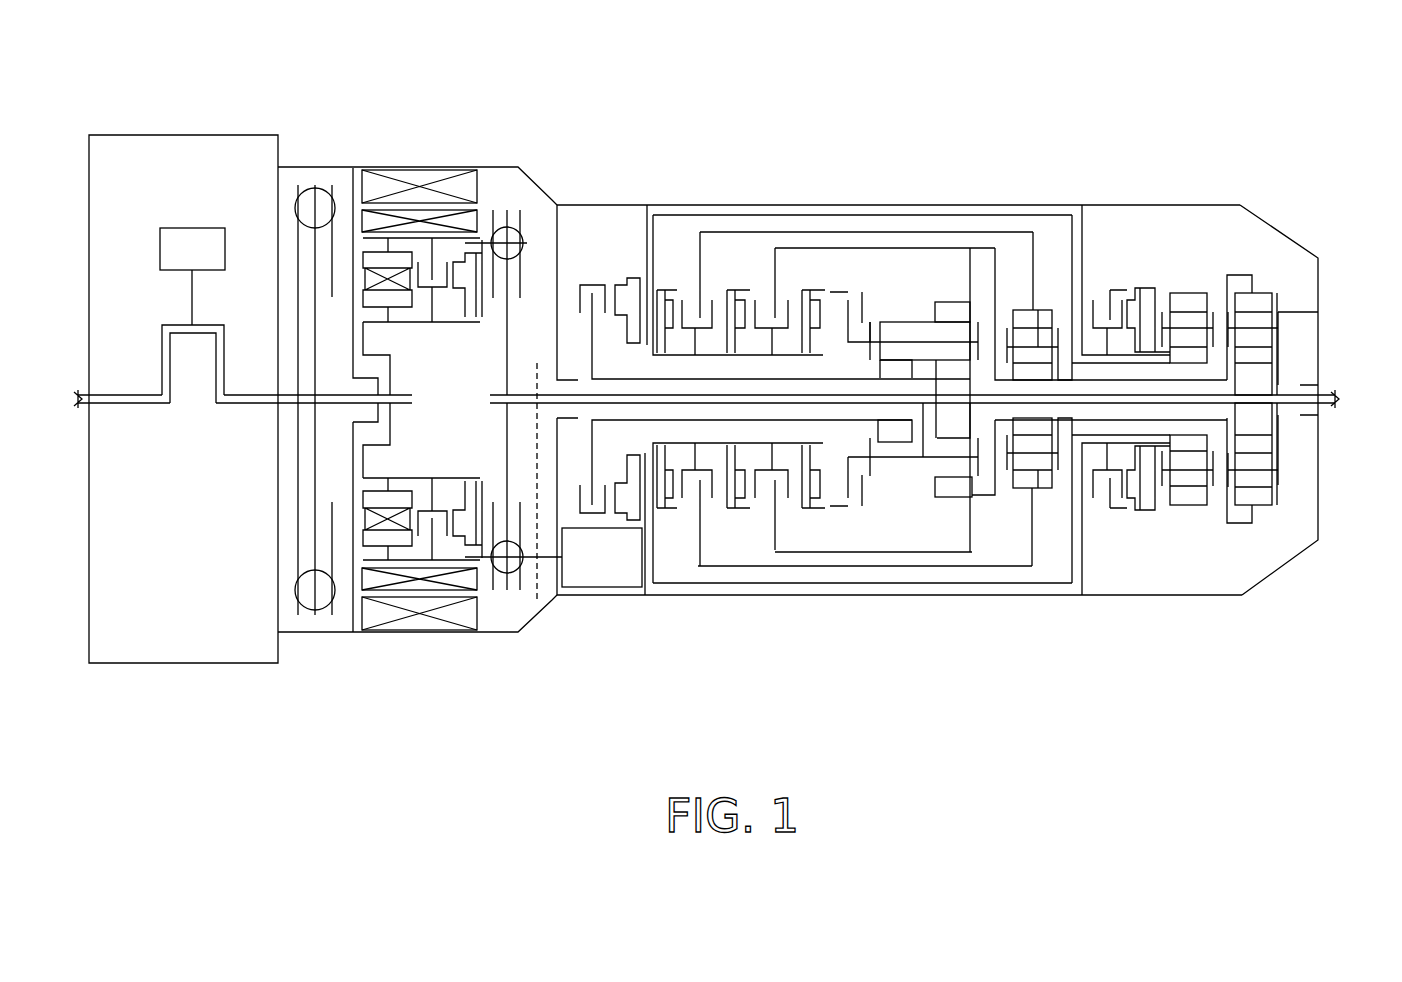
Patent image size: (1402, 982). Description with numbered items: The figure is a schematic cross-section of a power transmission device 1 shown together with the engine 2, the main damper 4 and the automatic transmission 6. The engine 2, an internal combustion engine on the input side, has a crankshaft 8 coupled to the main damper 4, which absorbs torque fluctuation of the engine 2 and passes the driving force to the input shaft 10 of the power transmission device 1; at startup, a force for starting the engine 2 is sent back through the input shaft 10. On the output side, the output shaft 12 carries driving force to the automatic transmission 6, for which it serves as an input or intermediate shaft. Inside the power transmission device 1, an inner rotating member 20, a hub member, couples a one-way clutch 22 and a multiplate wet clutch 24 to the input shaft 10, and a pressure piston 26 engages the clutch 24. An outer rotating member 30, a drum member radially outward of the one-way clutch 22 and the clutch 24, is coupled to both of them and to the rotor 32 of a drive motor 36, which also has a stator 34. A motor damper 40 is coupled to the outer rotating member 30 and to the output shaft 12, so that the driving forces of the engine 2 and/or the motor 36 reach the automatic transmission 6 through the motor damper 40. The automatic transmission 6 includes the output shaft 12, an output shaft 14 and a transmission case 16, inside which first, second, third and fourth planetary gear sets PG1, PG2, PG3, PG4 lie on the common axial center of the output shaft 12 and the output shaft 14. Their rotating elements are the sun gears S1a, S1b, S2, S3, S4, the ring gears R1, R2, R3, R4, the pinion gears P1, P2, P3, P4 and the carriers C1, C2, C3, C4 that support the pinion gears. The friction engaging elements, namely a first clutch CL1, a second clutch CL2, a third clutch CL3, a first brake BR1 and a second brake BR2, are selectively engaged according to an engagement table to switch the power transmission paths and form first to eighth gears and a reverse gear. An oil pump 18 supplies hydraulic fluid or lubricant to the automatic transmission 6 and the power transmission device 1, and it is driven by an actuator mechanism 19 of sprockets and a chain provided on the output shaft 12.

The power transmission device 1 is at (540, 158).
The engine 2 is at (168, 125).
The main damper 4 is at (306, 150).
The automatic transmission 6 is at (905, 203).
The crankshaft 8 is at (240, 405).
The input shaft 10 is at (330, 405).
The output shaft 12 is at (500, 405).
The output shaft 14 is at (1335, 399).
The transmission case 16 is at (1137, 205).
The oil pump 18 is at (598, 588).
The actuator mechanism 19 is at (537, 606).
The inner rotating member 20 is at (370, 340).
The one-way clutch 22 is at (402, 312).
The multiplate wet clutch 24 is at (442, 300).
The pressure piston 26 is at (478, 305).
The outer rotating member 30 is at (485, 215).
The rotor 32 is at (357, 220).
The stator 34 is at (396, 172).
The drive motor 36 is at (428, 165).
The motor damper 40 is at (535, 218).
The first brake BR1 is at (592, 282).
The second brake BR2 is at (1098, 290).
The first clutch CL1 is at (858, 286).
The second clutch CL2 is at (765, 286).
The third clutch CL3 is at (690, 286).
The first planetary gear set PG1 is at (957, 300).
The second planetary gear set PG2 is at (1040, 300).
The third planetary gear set PG3 is at (1188, 291).
The fourth planetary gear set PG4 is at (1262, 293).
The sun gear S1a is at (860, 292).
The sun gear S1b is at (925, 380).
The sun gear S2 is at (1005, 492).
The sun gear S3 is at (1300, 385).
The sun gear S4 is at (1278, 427).
The ring gear R1 is at (962, 298).
The ring gear R2 is at (1030, 306).
The ring gear R3 is at (1178, 297).
The ring gear R4 is at (1263, 297).
The pinion gear P1 is at (912, 338).
The pinion gear P2 is at (1028, 330).
The pinion gear P3 is at (1195, 293).
The pinion gear P4 is at (1258, 323).
The carrier C1 is at (985, 320).
The carrier C2 is at (1058, 333).
The carrier C3 is at (1222, 337).
The carrier C4 is at (1278, 317).